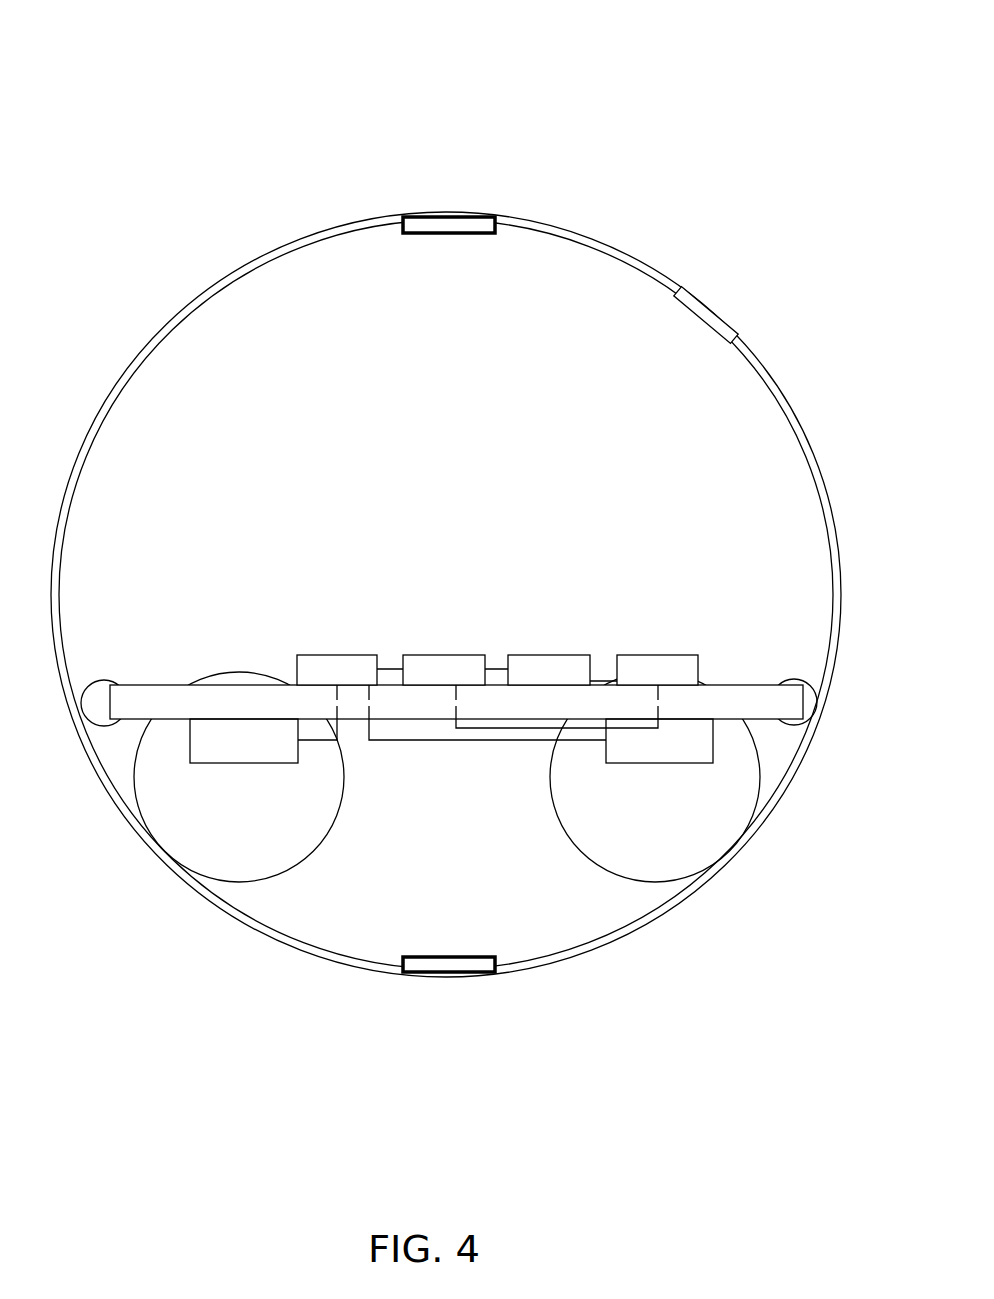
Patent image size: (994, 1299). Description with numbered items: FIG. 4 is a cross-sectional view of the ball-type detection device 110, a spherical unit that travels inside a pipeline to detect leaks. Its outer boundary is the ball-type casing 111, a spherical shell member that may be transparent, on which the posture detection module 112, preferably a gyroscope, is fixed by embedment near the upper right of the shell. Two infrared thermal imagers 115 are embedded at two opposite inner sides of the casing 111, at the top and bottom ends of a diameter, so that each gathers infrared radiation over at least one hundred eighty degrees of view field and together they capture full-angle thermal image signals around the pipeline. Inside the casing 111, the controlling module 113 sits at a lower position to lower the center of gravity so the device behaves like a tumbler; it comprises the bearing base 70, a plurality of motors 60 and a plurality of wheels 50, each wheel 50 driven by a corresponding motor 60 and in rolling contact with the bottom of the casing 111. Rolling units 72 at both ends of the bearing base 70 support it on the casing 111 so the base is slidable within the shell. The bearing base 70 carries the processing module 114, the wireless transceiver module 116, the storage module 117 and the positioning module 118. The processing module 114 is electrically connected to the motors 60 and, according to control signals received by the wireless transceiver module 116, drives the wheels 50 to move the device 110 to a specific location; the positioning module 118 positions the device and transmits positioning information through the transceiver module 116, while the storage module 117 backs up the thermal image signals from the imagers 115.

The ball-type detection device 110 is at (72, 40).
The ball-type casing 111 is at (622, 254).
The posture detection module 112 is at (712, 307).
The controlling module 113 is at (456, 701).
The processing module 114 is at (326, 656).
The infrared thermal imager 115 is at (462, 214).
The wireless transceiver module 116 is at (452, 656).
The storage module 117 is at (558, 656).
The positioning module 118 is at (665, 656).
The bearing base 70 is at (158, 686).
The rolling unit 72 is at (110, 681).
The motor 60 is at (243, 764).
The wheel 50 is at (306, 857).